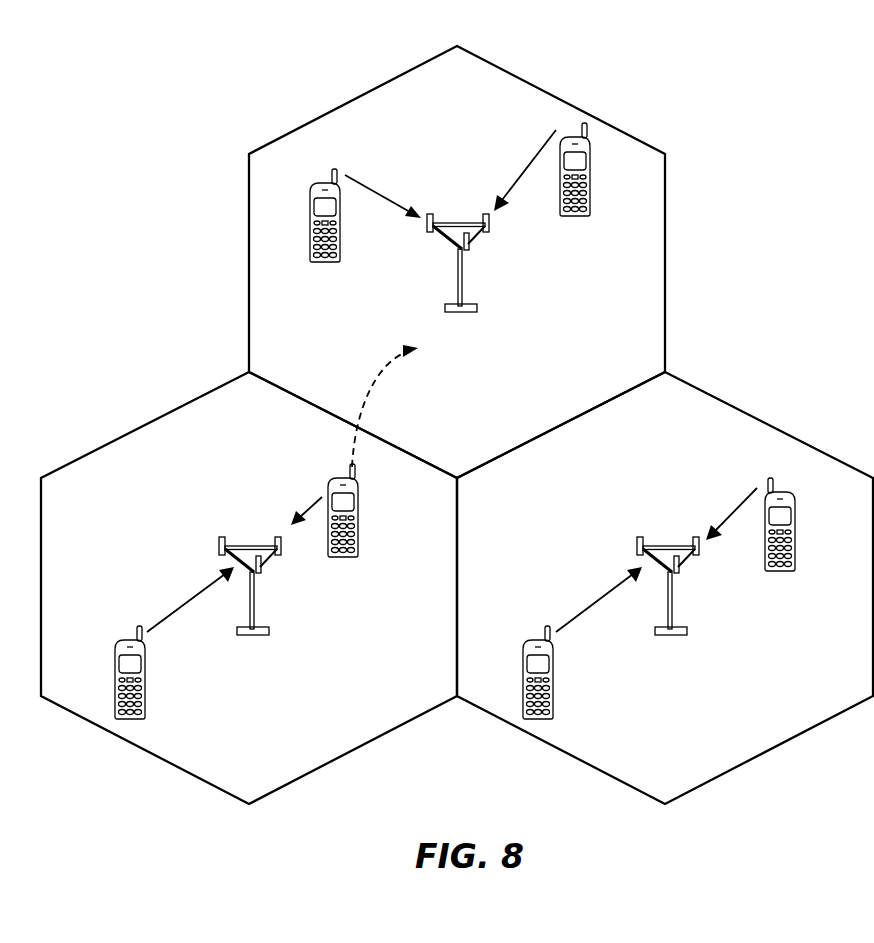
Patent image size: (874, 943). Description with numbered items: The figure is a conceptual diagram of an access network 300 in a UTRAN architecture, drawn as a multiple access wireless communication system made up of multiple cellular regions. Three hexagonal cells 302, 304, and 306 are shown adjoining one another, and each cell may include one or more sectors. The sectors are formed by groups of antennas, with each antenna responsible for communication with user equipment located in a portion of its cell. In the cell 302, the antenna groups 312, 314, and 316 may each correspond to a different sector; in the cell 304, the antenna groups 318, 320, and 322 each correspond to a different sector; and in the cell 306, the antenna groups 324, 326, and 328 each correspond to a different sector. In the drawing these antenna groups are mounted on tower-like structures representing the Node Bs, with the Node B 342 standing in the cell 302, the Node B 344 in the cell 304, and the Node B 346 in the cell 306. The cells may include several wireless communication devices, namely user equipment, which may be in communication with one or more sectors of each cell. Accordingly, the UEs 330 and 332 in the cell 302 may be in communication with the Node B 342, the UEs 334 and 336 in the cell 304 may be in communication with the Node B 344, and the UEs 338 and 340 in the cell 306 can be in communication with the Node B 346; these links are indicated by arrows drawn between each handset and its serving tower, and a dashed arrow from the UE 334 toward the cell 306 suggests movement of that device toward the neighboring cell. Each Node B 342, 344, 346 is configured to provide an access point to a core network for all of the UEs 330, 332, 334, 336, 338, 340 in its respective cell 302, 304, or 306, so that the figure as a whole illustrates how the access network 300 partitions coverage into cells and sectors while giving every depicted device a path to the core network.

The access network 300 is at (817, 47).
The cell 302 is at (769, 424).
The cell 304 is at (120, 437).
The cell 306 is at (545, 90).
The antenna group 312 is at (611, 533).
The antenna group 314 is at (706, 579).
The antenna group 316 is at (723, 558).
The antenna group 318 is at (288, 579).
The antenna group 320 is at (306, 558).
The antenna group 322 is at (194, 533).
The antenna group 324 is at (401, 237).
The antenna group 326 is at (495, 255).
The antenna group 328 is at (513, 234).
The UE 330 is at (795, 516).
The UE 332 is at (523, 667).
The UE 334 is at (359, 502).
The UE 336 is at (115, 667).
The UE 338 is at (327, 262).
The UE 340 is at (578, 216).
The Node B 342 is at (669, 564).
The Node B 344 is at (251, 564).
The Node B 346 is at (459, 242).